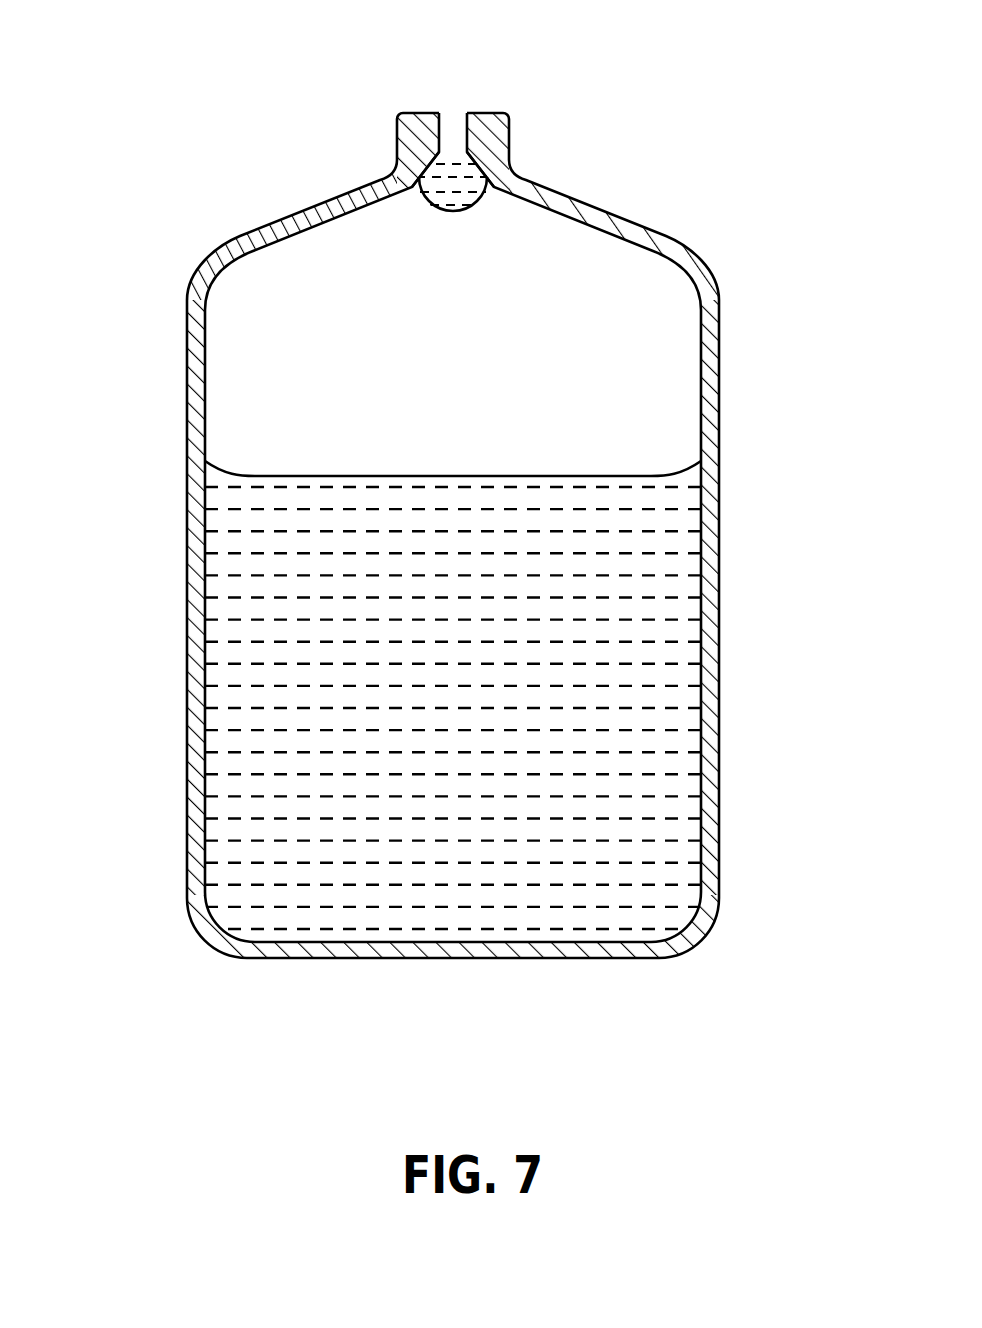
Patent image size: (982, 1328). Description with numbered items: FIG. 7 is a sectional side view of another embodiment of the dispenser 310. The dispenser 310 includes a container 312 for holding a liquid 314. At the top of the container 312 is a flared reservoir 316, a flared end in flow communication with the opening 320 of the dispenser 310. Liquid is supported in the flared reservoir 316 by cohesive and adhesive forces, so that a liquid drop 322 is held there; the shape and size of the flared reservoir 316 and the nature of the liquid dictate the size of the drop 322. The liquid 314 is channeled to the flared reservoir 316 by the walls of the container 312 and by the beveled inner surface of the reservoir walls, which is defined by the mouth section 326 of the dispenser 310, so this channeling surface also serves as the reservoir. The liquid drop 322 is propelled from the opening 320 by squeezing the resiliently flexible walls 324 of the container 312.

The dispenser 310 is at (740, 412).
The container 312 is at (719, 560).
The liquid 314 is at (668, 807).
The flared reservoir 316 is at (429, 211).
The opening 320 is at (455, 90).
The liquid drop 322 is at (468, 213).
The resiliently flexible walls 324 is at (187, 617).
The mouth section 326 is at (538, 144).